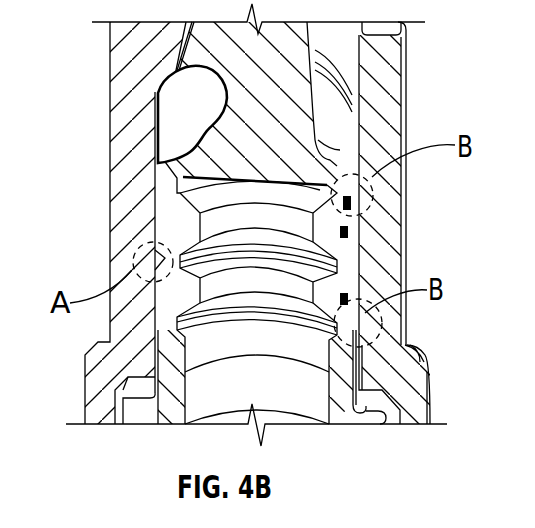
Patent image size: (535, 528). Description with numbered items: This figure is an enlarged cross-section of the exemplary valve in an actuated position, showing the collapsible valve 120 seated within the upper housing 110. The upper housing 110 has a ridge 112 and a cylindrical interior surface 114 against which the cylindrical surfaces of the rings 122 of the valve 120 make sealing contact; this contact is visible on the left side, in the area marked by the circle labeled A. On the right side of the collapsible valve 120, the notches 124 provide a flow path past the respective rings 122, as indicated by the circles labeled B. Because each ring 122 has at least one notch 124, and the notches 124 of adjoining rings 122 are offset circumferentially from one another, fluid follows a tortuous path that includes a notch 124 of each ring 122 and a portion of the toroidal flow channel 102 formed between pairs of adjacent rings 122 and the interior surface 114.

The toroidal flow channel 102 is at (367, 228).
The upper housing 110 is at (118, 103).
The ridge 112 is at (165, 78).
The cylindrical interior surface 114 is at (168, 107).
The collapsible valve 120 is at (353, 132).
The rings 122 is at (157, 265).
The notches 124 is at (367, 203).